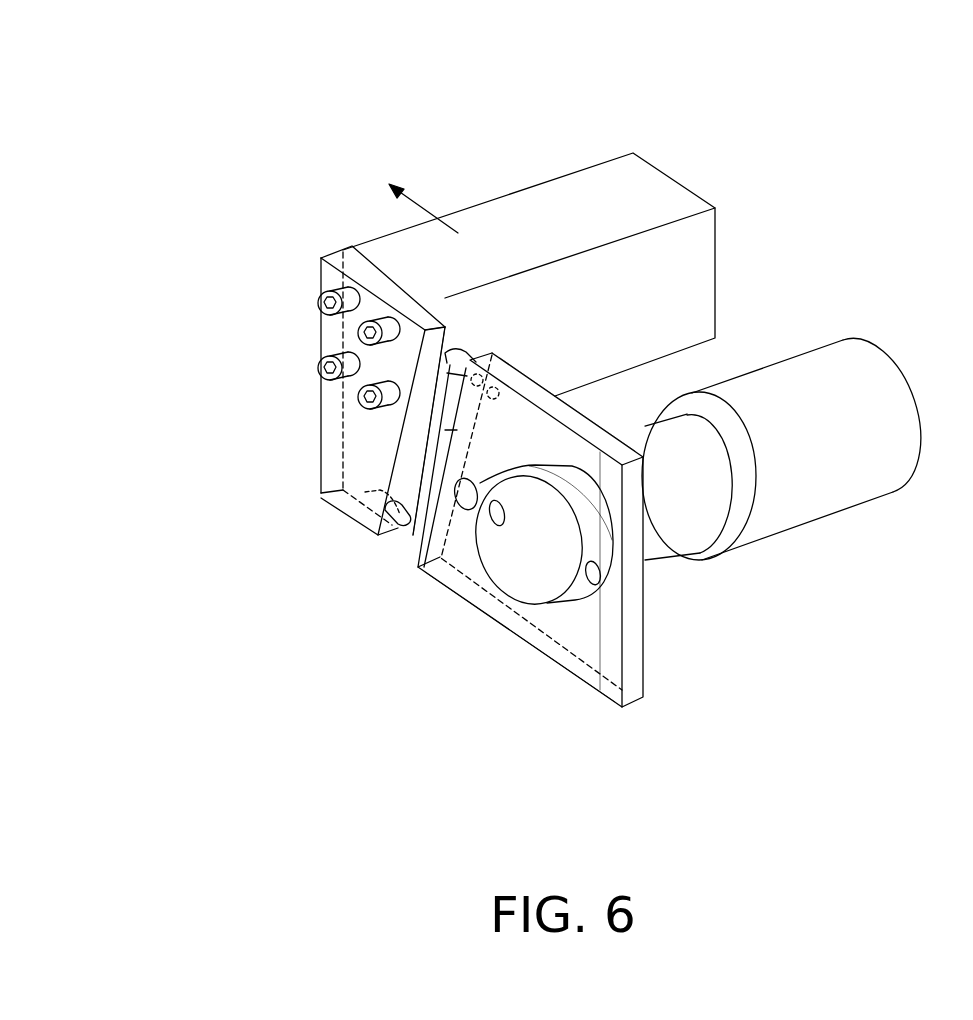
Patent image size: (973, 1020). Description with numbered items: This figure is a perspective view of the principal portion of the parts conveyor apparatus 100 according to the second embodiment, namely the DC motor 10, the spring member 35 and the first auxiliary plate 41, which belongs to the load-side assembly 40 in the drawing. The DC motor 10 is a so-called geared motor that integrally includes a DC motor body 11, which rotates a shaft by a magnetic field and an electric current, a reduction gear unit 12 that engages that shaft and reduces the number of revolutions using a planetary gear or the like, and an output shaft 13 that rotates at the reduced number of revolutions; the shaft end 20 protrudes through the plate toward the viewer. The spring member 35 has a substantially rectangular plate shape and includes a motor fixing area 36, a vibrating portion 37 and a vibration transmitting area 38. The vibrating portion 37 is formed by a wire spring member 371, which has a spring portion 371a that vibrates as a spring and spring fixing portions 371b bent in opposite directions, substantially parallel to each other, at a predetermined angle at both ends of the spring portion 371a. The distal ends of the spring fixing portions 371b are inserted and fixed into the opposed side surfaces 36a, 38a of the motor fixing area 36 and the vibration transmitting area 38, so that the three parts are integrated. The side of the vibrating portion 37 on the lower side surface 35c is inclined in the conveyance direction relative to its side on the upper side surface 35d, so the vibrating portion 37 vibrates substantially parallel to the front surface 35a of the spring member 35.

The parts conveyor apparatus 100 is at (823, 73).
The load unit 40 is at (506, 119).
The first auxiliary plate 41 is at (538, 207).
The spring member 35 is at (308, 713).
The vibration transmitting area 38 is at (347, 504).
The side surface of vibration transmitting area 38a is at (405, 438).
The vibrating portion 37 is at (404, 532).
The wire spring member 371 is at (372, 439).
The spring portion 371a is at (442, 397).
The spring fixing portions 371b is at (447, 372).
The motor fixing area 36 is at (457, 583).
The side surface of motor fixing area 36a is at (460, 440).
The upper side surface 35d is at (537, 390).
The lower side surface 35c is at (528, 643).
The front surface 35a is at (589, 644).
The DC motor 10 is at (896, 593).
The DC motor body 11 is at (795, 515).
The reduction gear unit 12 is at (682, 524).
The output shaft 13 is at (503, 515).
The output shaft 20 is at (533, 582).